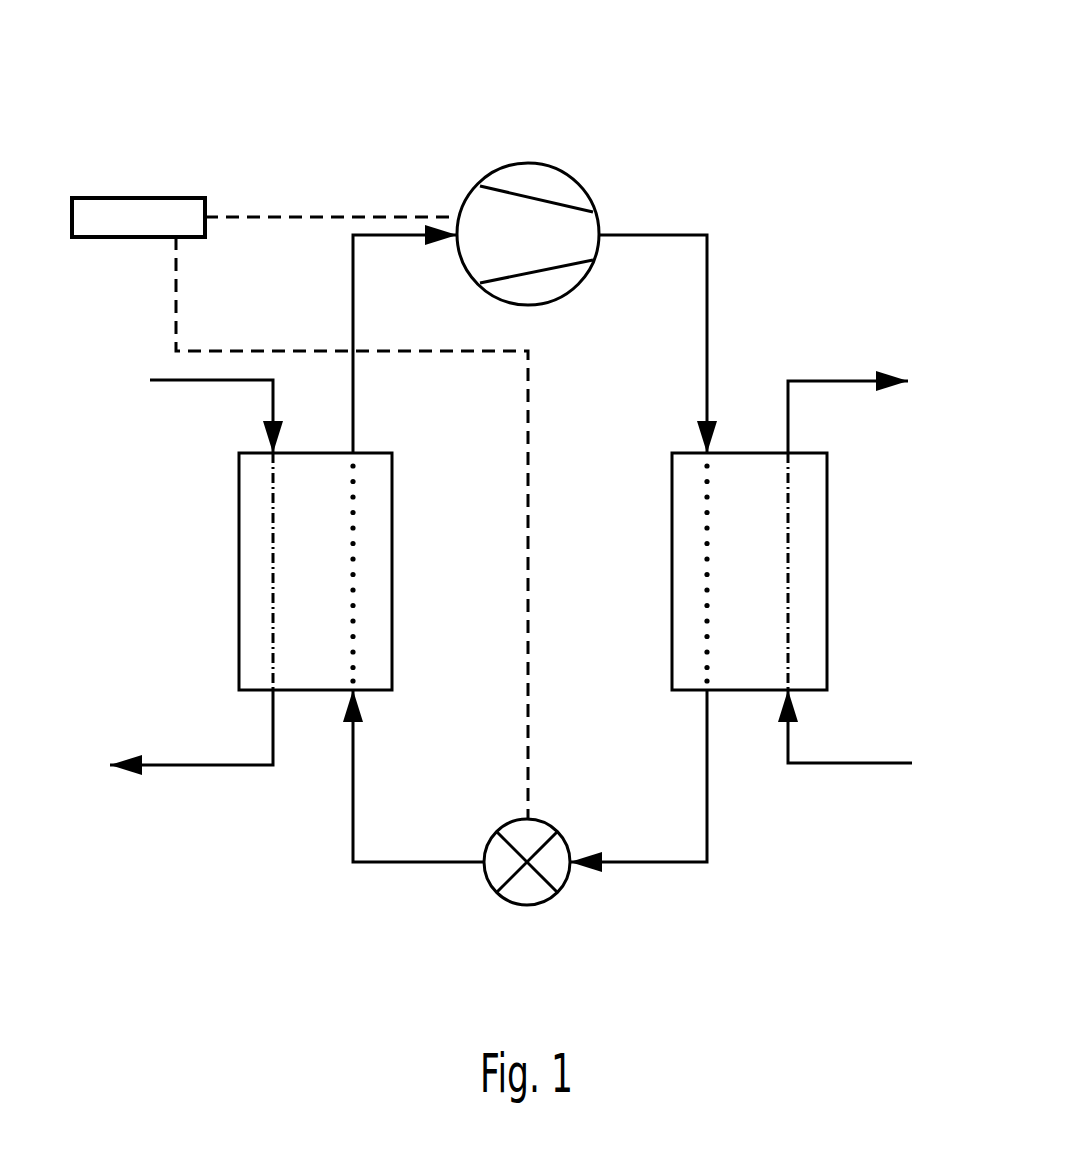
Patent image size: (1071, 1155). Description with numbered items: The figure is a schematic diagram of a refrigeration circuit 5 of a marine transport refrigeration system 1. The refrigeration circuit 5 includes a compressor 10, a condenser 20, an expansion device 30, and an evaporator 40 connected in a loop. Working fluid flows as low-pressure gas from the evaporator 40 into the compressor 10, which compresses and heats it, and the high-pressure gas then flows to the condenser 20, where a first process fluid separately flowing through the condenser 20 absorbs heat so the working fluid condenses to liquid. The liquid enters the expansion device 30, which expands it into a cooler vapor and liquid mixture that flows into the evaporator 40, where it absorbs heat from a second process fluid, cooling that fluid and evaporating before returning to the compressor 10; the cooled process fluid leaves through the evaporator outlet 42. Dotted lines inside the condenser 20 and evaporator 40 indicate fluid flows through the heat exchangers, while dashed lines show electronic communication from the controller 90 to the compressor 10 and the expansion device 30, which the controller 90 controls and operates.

The marine transport refrigeration system 1 is at (237, 105).
The refrigeration circuit 5 is at (710, 215).
The compressor 10 is at (510, 163).
The condenser 20 is at (827, 510).
The expansion device 30 is at (565, 880).
The evaporator 40 is at (239, 510).
The evaporator process fluid outlet 42 is at (205, 765).
The controller 90 is at (186, 198).